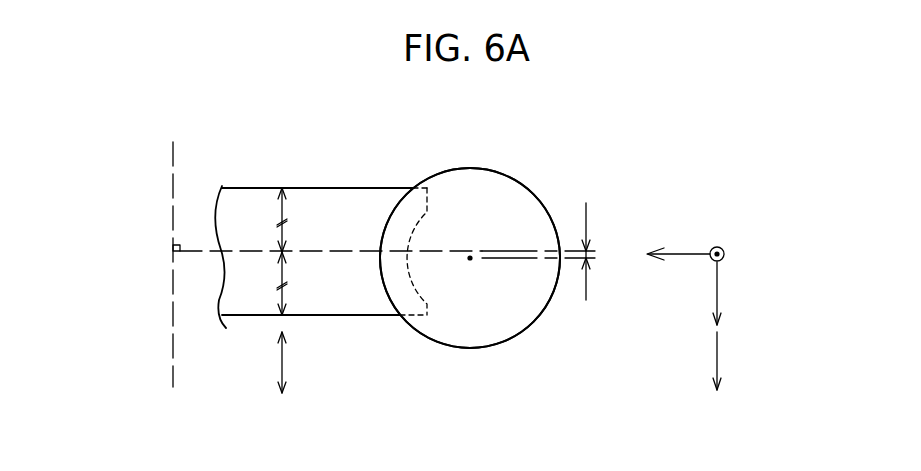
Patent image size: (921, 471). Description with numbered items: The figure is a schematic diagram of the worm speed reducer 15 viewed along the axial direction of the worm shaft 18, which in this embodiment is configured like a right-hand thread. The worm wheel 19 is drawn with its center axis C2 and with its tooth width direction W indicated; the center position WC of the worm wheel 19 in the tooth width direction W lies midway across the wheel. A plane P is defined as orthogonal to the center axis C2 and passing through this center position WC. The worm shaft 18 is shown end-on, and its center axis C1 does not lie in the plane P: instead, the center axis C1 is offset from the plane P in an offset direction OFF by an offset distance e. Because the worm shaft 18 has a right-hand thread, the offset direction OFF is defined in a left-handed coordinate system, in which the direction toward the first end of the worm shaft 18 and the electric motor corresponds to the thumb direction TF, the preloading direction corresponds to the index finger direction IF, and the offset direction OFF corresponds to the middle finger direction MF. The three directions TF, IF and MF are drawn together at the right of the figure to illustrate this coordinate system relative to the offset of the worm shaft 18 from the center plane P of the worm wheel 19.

The worm wheel 19 is at (256, 187).
The worm speed reducer 15 is at (533, 172).
The worm shaft 18 is at (497, 351).
The center axis of the worm shaft C1 is at (470, 261).
The center axis C2 is at (171, 183).
The plane P is at (507, 250).
The center position of the worm wheel WC is at (283, 251).
The tooth width direction W is at (283, 362).
The offset distance e is at (596, 254).
The index finger direction IF is at (690, 254).
The tangential force TF is at (717, 246).
The middle finger direction MF is at (717, 285).
The offset direction OFF is at (717, 353).